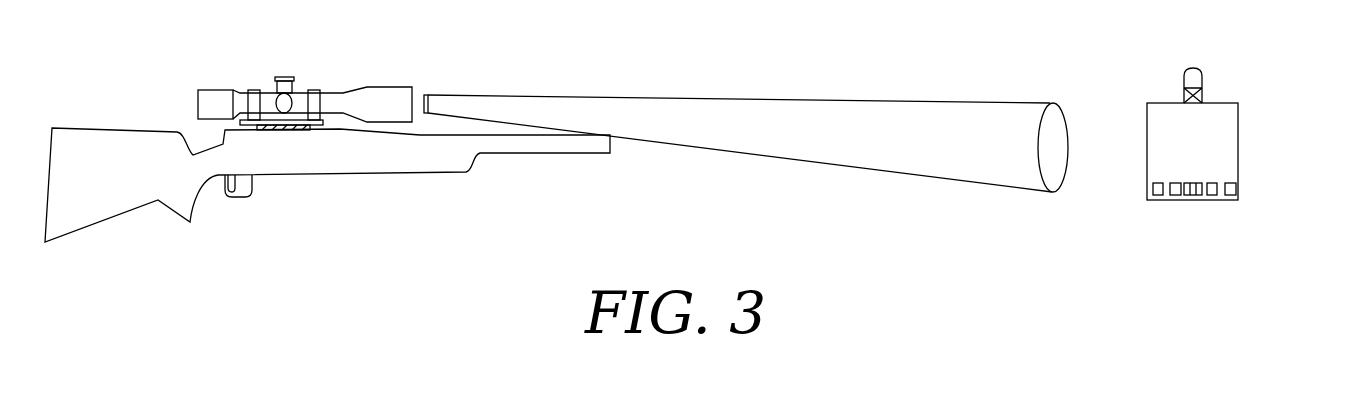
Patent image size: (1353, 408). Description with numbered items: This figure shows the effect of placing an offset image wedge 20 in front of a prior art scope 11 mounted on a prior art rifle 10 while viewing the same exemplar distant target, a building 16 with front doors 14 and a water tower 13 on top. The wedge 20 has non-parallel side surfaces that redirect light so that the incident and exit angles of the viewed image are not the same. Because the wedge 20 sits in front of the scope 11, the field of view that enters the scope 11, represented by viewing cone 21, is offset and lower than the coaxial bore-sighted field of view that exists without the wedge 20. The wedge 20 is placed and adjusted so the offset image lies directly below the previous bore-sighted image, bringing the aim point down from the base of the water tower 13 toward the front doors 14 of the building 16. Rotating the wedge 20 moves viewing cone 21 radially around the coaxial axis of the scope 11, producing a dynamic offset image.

The rifle 10 is at (273, 157).
The scope 11 is at (370, 98).
The wedge 20 is at (428, 110).
The viewing cone 21 is at (777, 107).
The building 16 is at (1215, 150).
The water tower 13 is at (1198, 82).
The front doors 14 is at (1190, 200).